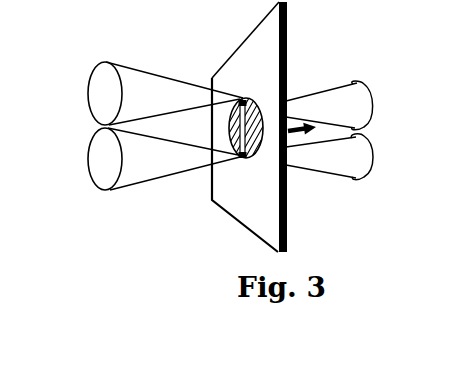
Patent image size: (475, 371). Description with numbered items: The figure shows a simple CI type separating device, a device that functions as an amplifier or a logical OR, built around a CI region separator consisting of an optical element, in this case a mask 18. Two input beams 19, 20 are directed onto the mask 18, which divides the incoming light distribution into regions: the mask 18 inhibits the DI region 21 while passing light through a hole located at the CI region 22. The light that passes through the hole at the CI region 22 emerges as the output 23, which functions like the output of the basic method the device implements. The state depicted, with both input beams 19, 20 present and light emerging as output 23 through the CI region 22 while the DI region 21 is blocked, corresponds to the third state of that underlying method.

The mask 18 is at (242, 52).
The input beam 19 is at (95, 88).
The input beam 20 is at (95, 162).
The DI region 21 is at (253, 158).
The CI region 22 is at (248, 98).
The output 23 is at (315, 123).